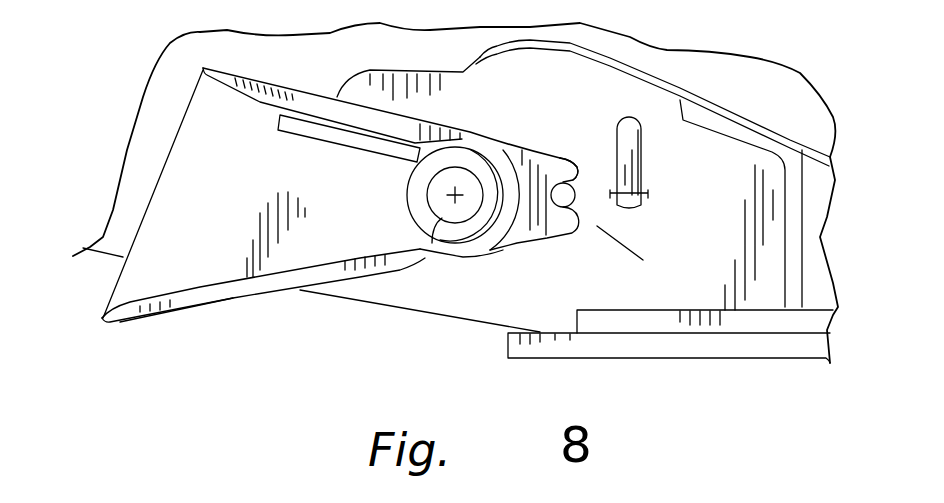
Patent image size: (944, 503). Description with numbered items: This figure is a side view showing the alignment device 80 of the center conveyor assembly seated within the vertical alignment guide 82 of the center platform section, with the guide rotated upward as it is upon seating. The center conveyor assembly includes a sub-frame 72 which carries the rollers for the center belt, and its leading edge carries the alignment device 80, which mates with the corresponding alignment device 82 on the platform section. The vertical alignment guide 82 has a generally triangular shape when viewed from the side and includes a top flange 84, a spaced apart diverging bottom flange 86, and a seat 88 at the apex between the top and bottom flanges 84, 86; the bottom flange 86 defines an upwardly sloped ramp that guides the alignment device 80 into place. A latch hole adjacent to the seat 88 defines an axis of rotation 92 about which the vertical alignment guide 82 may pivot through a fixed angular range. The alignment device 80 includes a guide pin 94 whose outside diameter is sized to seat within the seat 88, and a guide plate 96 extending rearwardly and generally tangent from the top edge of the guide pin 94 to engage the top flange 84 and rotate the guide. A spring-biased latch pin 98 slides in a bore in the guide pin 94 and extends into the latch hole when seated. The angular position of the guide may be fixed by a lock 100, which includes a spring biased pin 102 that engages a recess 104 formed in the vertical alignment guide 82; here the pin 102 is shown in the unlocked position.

The sub-frame 72 is at (110, 250).
The alignment device 80 is at (356, 219).
The vertical alignment guide 82 is at (210, 306).
The top flange 84 is at (260, 104).
The bottom flange 86 is at (232, 281).
The seat 88 is at (518, 190).
The axis of rotation 92 is at (463, 200).
The guide pin 94 is at (419, 218).
The guide plate 96 is at (335, 138).
The latch pin 98 is at (432, 243).
The lock 100 is at (597, 226).
The spring biased pin 102 is at (640, 166).
The recess 104 is at (578, 171).